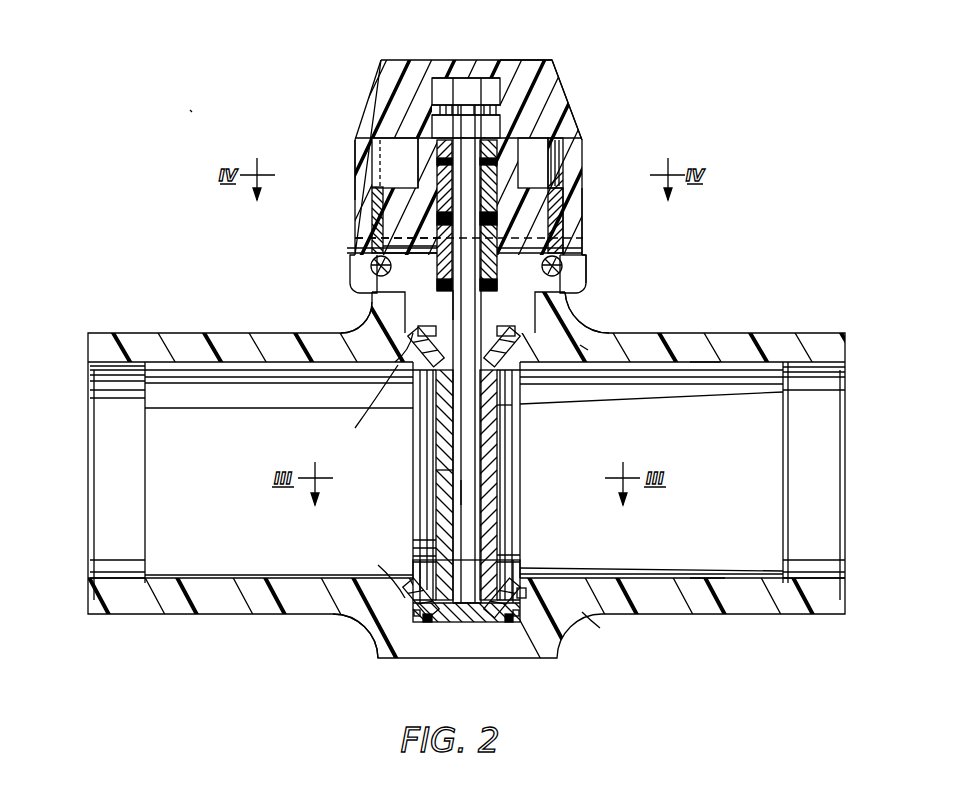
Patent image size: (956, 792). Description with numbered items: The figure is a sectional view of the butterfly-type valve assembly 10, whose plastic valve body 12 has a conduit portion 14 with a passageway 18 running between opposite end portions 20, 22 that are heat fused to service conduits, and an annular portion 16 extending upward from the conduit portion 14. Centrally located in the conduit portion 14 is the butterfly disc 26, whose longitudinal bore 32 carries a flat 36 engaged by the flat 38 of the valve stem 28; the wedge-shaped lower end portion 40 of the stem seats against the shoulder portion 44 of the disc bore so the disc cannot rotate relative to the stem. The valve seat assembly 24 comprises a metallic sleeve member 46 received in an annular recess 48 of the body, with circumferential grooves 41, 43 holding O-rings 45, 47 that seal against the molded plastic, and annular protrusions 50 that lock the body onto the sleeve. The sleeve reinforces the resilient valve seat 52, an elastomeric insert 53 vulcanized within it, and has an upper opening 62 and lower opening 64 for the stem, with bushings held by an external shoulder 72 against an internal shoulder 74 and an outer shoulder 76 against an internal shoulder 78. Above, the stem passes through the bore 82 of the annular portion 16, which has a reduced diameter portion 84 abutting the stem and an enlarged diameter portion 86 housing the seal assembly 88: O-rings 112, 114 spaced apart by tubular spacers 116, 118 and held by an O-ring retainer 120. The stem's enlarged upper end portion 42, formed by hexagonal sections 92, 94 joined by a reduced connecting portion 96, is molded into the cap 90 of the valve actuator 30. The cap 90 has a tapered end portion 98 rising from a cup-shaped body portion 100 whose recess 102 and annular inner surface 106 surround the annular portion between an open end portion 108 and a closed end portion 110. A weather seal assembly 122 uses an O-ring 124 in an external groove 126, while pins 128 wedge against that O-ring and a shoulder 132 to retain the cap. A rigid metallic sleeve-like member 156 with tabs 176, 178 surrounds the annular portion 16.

The valve assembly 10 is at (190, 110).
The valve body 12 is at (570, 652).
The conduit portion 14 is at (707, 612).
The annular portion 16 is at (500, 316).
The passageway 18 is at (705, 333).
The end portion 20 is at (108, 373).
The end portion 22 is at (797, 333).
The valve seat assembly 24 is at (538, 393).
The butterfly disc 26 is at (492, 516).
The valve stem 28 is at (440, 437).
The valve actuator 30 is at (578, 75).
The longitudinal bore 32 is at (490, 470).
The flat 36 is at (445, 470).
The flat 38 is at (465, 492).
The wedge-shaped lower end portion 40 is at (428, 556).
The circumferential groove 41 is at (398, 645).
The enlarged upper end portion 42 is at (432, 84).
The circumferential groove 43 is at (508, 625).
The shoulder portion 44 is at (440, 545).
The O-ring 45 is at (426, 625).
The metallic sleeve member 46 is at (425, 455).
The O-ring 47 is at (516, 628).
The annular recess 48 is at (343, 333).
The annular protrusions 50 is at (479, 490).
The valve seat 52 is at (520, 560).
The elastomeric insert 53 is at (502, 410).
The upper opening 62 is at (514, 342).
The lower opening 64 is at (512, 600).
The external shoulder 72 is at (420, 346).
The internal shoulder 74 is at (395, 362).
The outer shoulder 76 is at (462, 630).
The internal shoulder 78 is at (400, 620).
The bore 82 is at (378, 322).
The reduced diameter portion 84 is at (512, 328).
The enlarged diameter portion 86 is at (578, 228).
The seal assembly 88 is at (437, 232).
The cap 90 is at (508, 68).
The hexagonal section 92 is at (476, 84).
The hexagonal section 94 is at (560, 133).
The connecting portion 96 is at (458, 106).
The tapered end portion 98 is at (572, 64).
The cup-shaped body portion 100 is at (588, 182).
The recess 102 is at (398, 145).
The annular inner surface 106 is at (378, 205).
The open end portion 108 is at (585, 300).
The closed end portion 110 is at (567, 158).
The O-ring 112 is at (495, 228).
The O-ring 114 is at (448, 304).
The tubular spacer 116 is at (400, 165).
The tubular spacer 118 is at (498, 274).
The O-ring retainer 120 is at (385, 152).
The weather seal assembly 122 is at (363, 265).
The O-ring 124 is at (574, 270).
The external groove 126 is at (395, 272).
The pins 128 is at (578, 252).
The shoulder 132 is at (372, 246).
The metallic sleeve-like member 156 is at (582, 202).
The tab 176 is at (540, 166).
The tab 178 is at (362, 160).